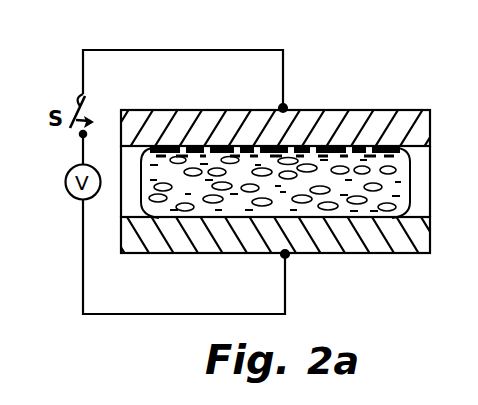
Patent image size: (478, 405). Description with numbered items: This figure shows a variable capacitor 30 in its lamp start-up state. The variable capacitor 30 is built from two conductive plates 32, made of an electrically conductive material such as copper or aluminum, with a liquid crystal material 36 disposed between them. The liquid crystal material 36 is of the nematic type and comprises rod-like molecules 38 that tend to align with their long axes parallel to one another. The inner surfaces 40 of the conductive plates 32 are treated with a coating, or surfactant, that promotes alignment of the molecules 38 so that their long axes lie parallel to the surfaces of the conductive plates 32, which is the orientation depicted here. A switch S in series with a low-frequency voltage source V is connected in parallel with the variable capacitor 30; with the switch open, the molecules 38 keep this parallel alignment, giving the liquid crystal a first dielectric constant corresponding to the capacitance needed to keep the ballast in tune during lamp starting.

The variable capacitor 30 is at (371, 70).
The conductive plates 32 is at (348, 108).
The liquid crystal material 36 is at (405, 197).
The molecules 38 is at (336, 213).
The inner surfaces 40 is at (420, 150).